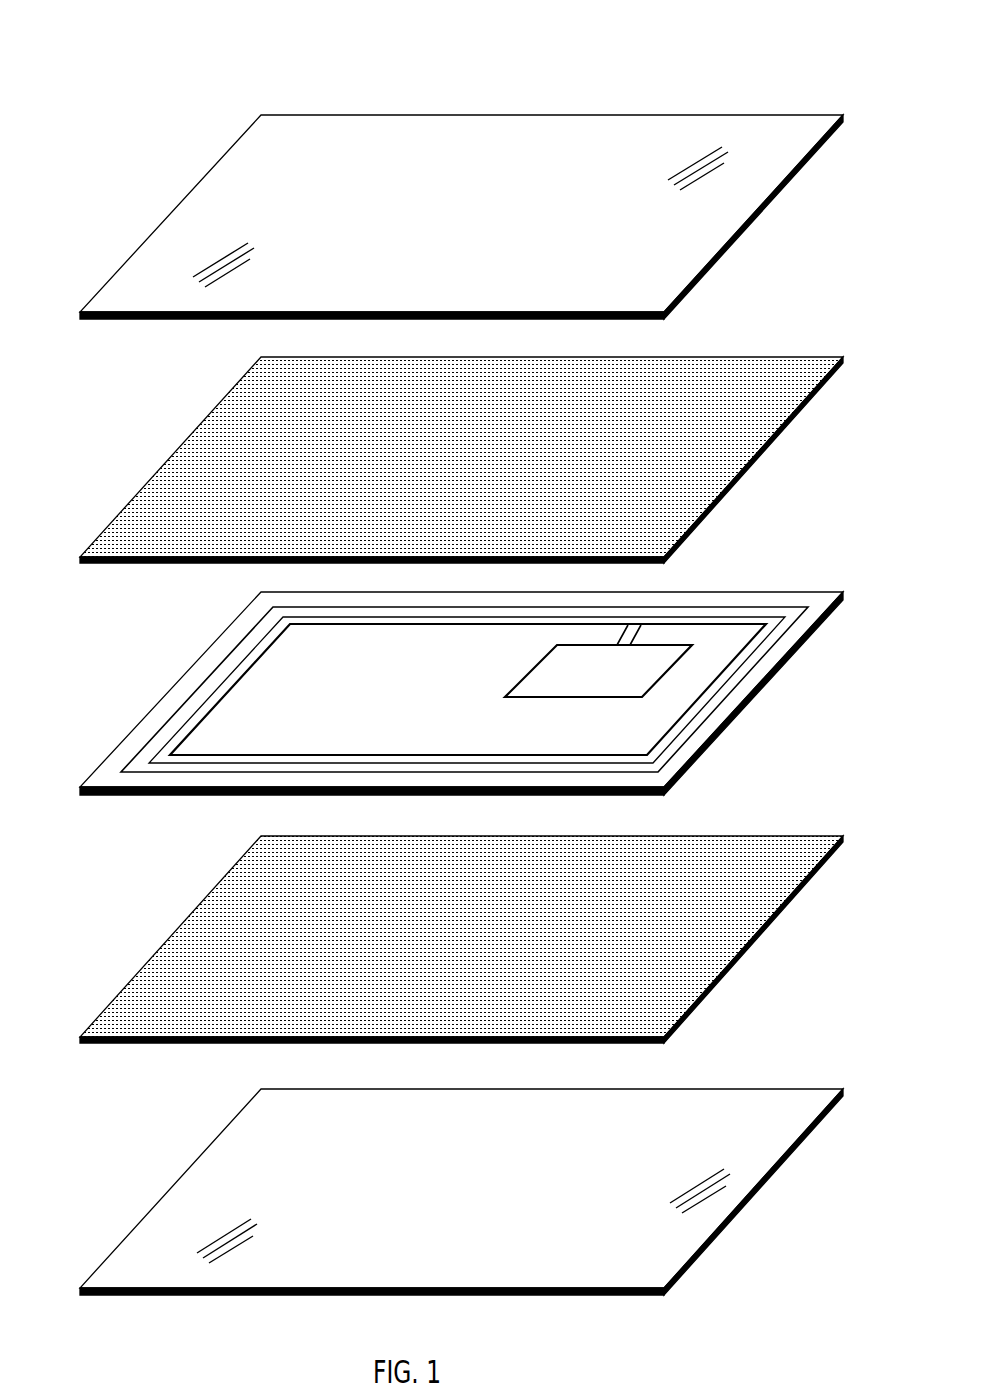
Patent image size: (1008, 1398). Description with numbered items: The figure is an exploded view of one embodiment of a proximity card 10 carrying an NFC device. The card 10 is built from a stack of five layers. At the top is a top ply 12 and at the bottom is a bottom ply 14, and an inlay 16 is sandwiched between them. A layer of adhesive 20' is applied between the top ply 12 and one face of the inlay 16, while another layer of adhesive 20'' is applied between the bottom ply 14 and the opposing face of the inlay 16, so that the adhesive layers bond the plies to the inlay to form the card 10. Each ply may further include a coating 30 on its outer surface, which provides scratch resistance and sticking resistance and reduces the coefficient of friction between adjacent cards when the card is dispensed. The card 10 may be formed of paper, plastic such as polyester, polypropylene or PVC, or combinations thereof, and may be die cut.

The proximity card 10 is at (233, 93).
The top ply 12 is at (763, 152).
The bottom ply 14 is at (762, 1118).
The inlay 16 is at (712, 643).
The layer of adhesive 20' is at (440, 460).
The layer of adhesive 20'' is at (444, 939).
The coating 30 is at (713, 175).